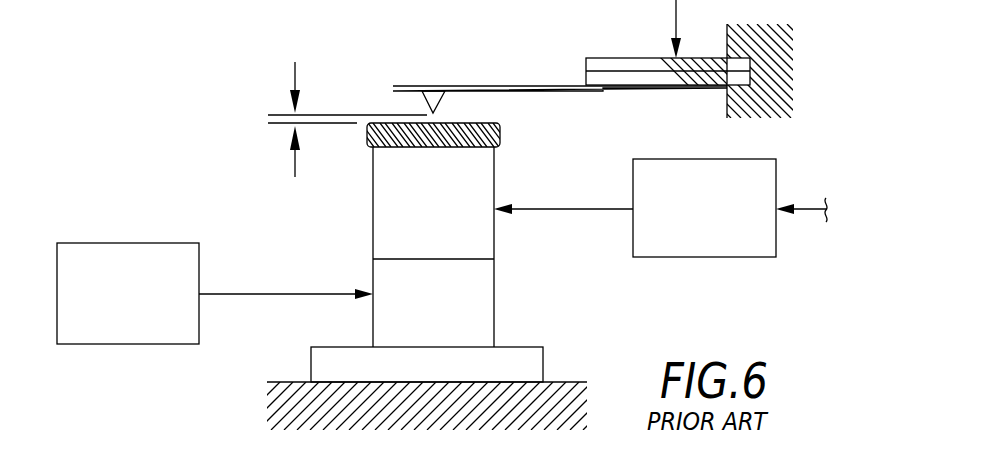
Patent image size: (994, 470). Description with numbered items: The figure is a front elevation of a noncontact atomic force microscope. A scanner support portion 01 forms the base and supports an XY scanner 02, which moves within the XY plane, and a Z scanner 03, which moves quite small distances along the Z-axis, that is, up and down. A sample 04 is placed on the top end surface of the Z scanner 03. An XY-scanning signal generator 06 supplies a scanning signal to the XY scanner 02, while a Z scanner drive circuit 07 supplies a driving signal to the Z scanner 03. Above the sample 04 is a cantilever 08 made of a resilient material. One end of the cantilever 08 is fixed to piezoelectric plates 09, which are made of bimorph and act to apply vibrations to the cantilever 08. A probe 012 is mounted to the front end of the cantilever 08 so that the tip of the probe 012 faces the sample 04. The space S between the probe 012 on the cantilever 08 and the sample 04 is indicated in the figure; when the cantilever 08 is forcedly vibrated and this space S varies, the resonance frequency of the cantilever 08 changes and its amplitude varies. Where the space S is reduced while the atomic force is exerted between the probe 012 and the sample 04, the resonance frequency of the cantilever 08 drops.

The scanner support portion 01 is at (562, 382).
The XY scanner 02 is at (495, 298).
The Z scanner 03 is at (373, 203).
The sample 04 is at (500, 135).
The XY-scanning signal generator 06 is at (200, 266).
The Z scanner drive circuit 07 is at (707, 257).
The cantilever 08 is at (495, 86).
The piezoelectric plates 09 is at (648, 88).
The probe 012 is at (445, 97).
The space S is at (268, 118).